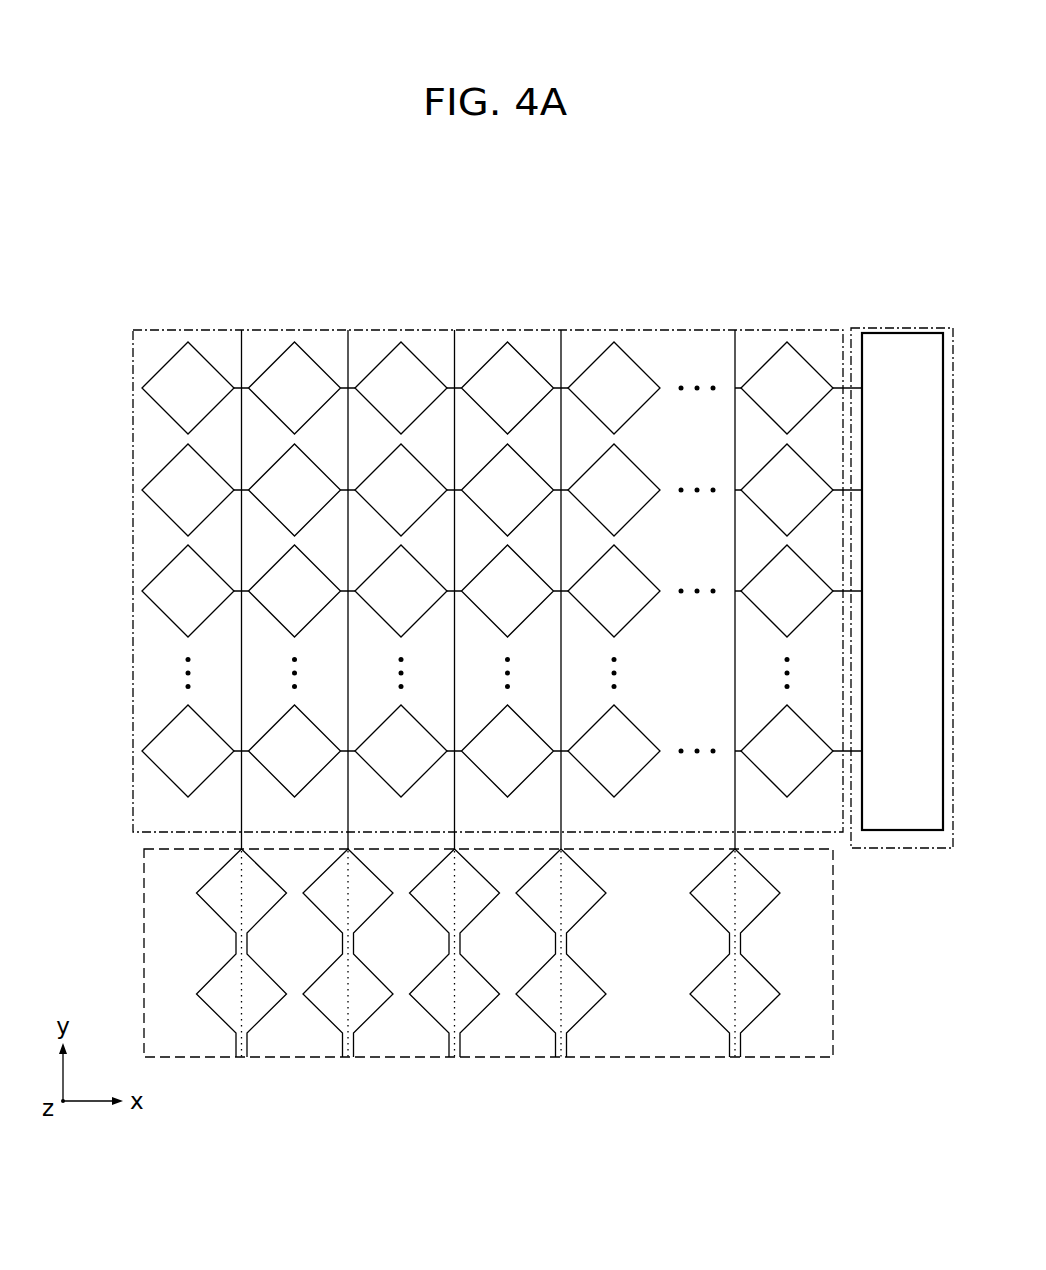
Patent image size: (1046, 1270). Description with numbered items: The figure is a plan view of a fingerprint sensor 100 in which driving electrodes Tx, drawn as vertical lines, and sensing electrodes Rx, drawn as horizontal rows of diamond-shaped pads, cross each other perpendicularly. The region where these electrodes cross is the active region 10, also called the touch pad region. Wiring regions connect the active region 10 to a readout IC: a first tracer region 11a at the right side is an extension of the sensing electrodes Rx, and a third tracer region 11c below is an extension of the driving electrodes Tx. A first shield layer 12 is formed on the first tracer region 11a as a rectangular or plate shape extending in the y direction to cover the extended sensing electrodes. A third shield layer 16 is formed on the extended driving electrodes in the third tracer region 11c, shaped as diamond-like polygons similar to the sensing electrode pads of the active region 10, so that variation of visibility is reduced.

The fingerprint sensor 100 is at (829, 251).
The active region 10 is at (657, 330).
The first tracer region 11a is at (938, 328).
The first shield layer 12 is at (890, 333).
The third tracer region 11c is at (833, 958).
The third shield layer 16 is at (215, 911).